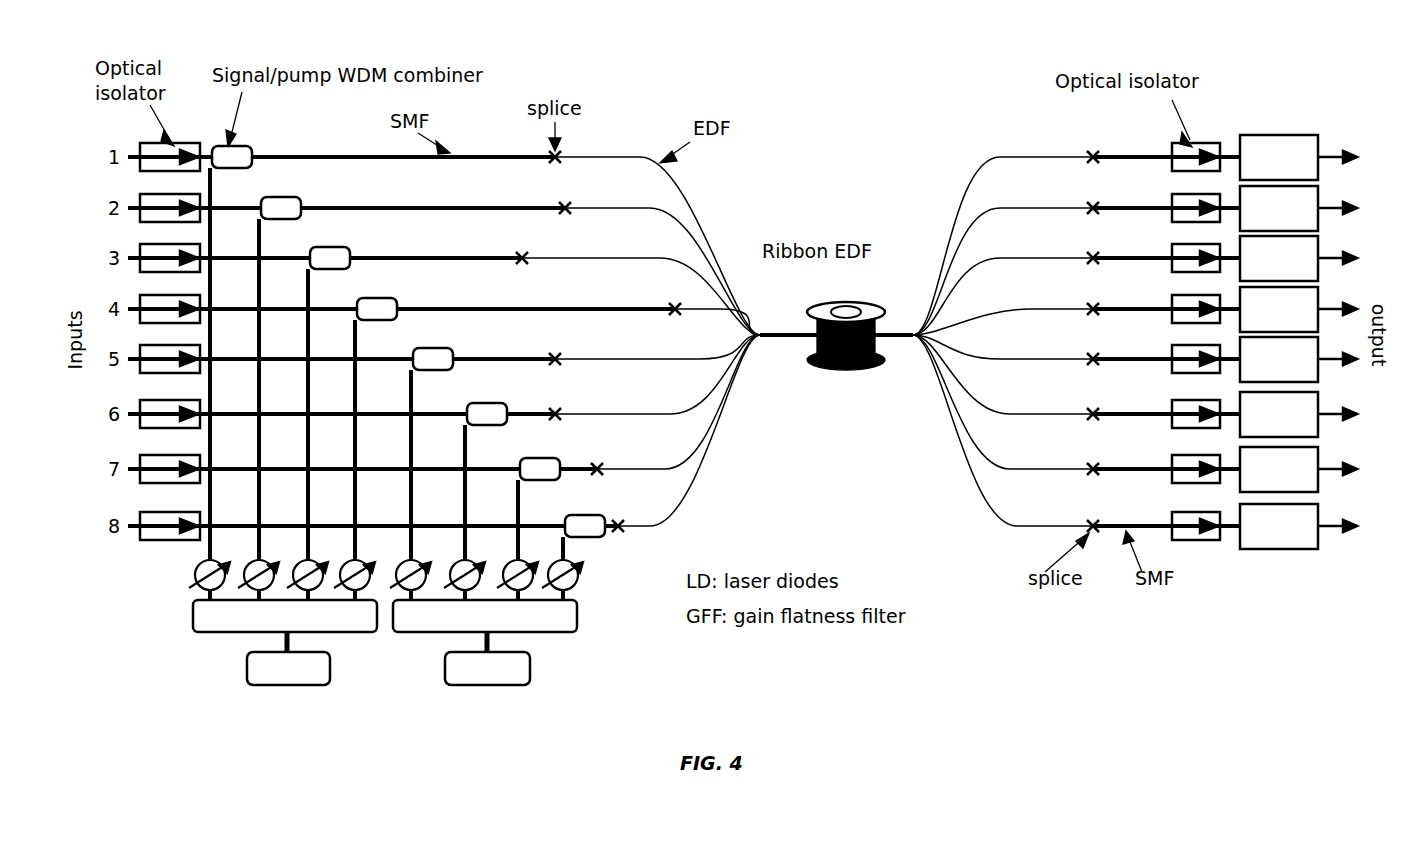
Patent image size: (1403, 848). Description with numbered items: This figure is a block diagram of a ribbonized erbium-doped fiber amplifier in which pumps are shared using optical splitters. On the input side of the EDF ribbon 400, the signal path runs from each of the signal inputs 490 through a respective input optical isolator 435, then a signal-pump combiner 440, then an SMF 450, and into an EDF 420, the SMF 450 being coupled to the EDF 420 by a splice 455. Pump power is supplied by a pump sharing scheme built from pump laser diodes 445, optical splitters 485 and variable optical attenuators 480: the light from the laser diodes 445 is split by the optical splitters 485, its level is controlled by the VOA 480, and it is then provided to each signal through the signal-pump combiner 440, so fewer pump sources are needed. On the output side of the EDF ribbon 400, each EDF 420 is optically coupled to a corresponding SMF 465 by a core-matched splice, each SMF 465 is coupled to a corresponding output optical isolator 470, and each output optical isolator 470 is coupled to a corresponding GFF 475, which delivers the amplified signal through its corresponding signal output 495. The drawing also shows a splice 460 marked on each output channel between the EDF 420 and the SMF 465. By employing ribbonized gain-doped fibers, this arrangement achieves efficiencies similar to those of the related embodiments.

The EDF ribbon 400 is at (855, 368).
The EDF 420 is at (690, 200).
The input optical isolator 435 is at (165, 542).
The signal-pump combiner 440 is at (246, 142).
The pump laser diode 445 is at (322, 688).
The SMF 450 is at (365, 206).
The splice 455 is at (560, 168).
The output splice 460 is at (1095, 152).
The SMF 465 is at (1152, 153).
The output optical isolator 470 is at (1217, 142).
The GFF 475 is at (1295, 134).
The variable optical attenuator 480 is at (186, 580).
The optical splitter 485 is at (238, 636).
The signal input 490 is at (134, 163).
The signal output 495 is at (1335, 206).